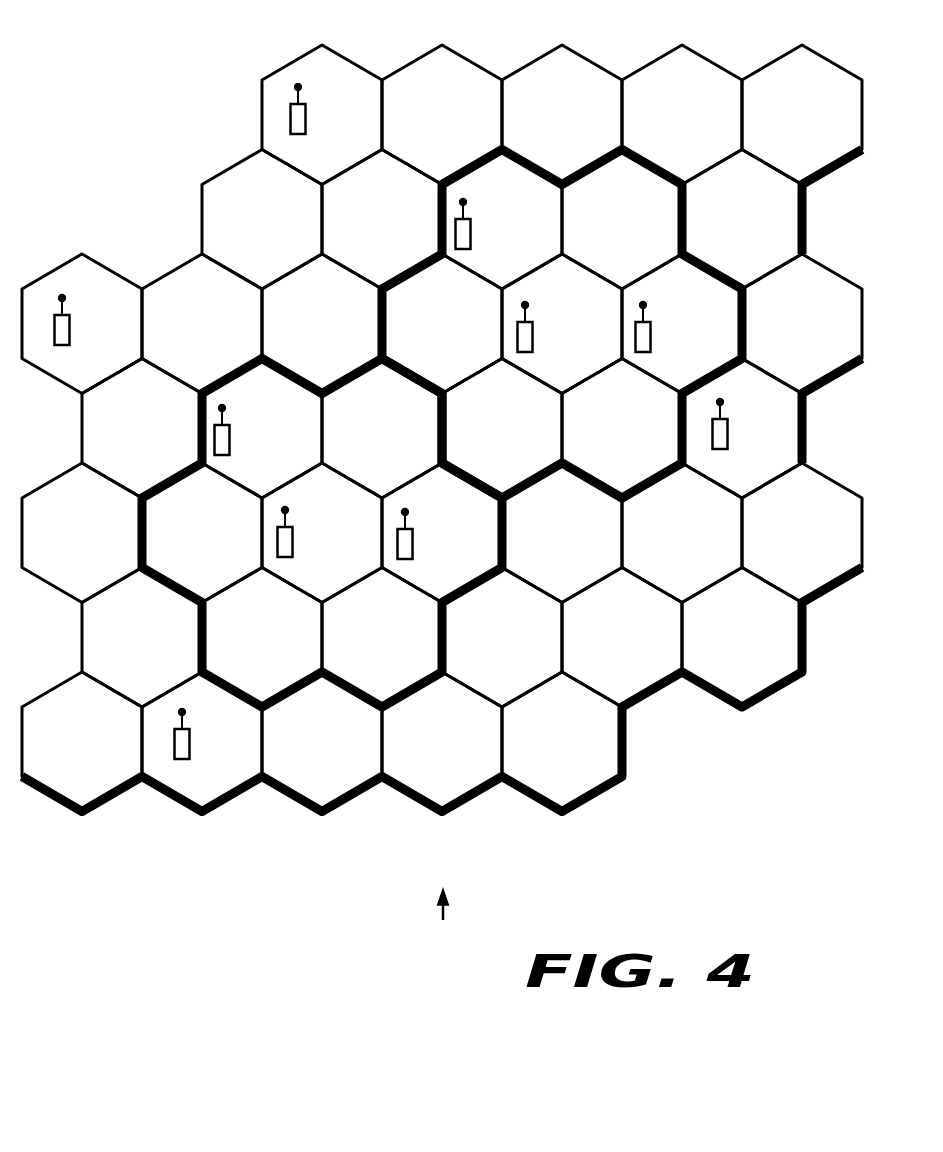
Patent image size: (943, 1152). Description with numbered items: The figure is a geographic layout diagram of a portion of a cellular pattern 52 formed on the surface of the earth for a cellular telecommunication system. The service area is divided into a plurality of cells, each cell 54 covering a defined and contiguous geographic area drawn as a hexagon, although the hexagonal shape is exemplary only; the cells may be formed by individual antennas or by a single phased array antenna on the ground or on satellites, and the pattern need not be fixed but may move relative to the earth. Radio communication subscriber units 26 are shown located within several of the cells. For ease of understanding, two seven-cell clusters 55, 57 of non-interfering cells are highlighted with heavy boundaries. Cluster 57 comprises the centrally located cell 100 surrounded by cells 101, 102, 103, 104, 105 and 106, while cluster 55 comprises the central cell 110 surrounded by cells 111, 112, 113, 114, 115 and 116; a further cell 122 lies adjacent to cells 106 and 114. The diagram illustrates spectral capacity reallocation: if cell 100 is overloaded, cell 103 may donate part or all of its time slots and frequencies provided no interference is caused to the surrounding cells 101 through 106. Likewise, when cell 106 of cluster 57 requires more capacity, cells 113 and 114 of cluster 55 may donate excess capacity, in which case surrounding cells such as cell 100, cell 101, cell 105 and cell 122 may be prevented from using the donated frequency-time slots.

The cell 54 is at (707, 62).
The n-cell cluster 57 is at (703, 268).
The n-cell cluster 55 is at (200, 633).
The cellular pattern 52 is at (442, 923).
The subscriber unit 26 is at (306, 124).
The cell 100 is at (596, 312).
The cell 101 is at (464, 338).
The cell 102 is at (534, 208).
The cell 103 is at (641, 234).
The cell 104 is at (713, 312).
The cell 105 is at (641, 442).
The cell 106 is at (522, 442).
The cell 110 is at (355, 516).
The cell 111 is at (224, 544).
The cell 112 is at (292, 414).
The cell 113 is at (401, 442).
The cell 114 is at (476, 516).
The cell 115 is at (401, 646).
The cell 116 is at (283, 648).
The cell 122 is at (580, 546).